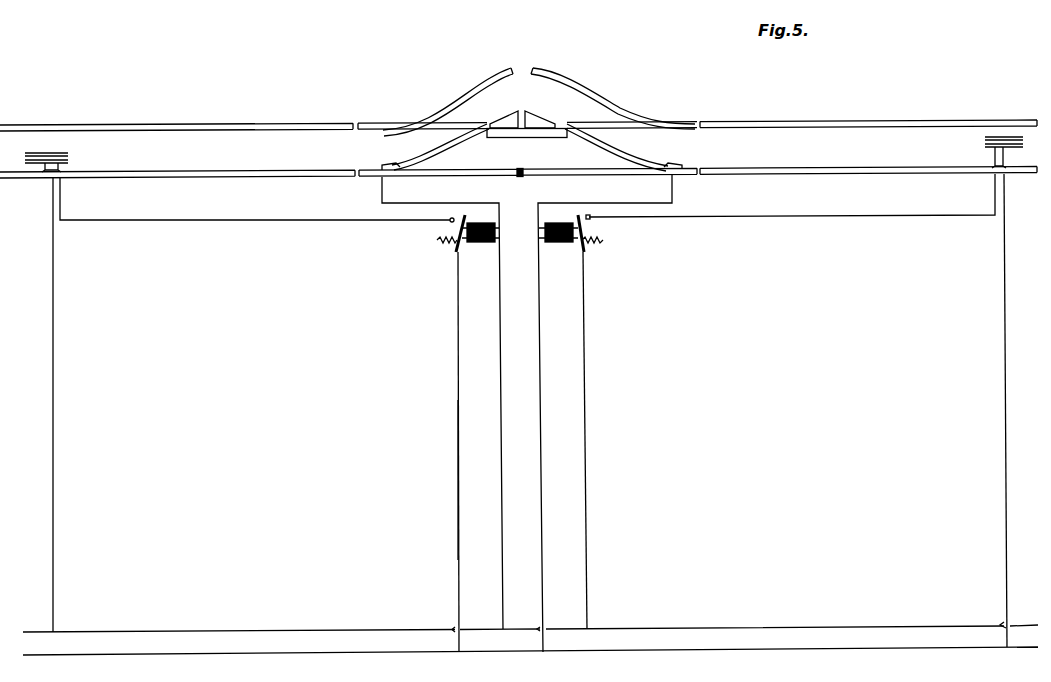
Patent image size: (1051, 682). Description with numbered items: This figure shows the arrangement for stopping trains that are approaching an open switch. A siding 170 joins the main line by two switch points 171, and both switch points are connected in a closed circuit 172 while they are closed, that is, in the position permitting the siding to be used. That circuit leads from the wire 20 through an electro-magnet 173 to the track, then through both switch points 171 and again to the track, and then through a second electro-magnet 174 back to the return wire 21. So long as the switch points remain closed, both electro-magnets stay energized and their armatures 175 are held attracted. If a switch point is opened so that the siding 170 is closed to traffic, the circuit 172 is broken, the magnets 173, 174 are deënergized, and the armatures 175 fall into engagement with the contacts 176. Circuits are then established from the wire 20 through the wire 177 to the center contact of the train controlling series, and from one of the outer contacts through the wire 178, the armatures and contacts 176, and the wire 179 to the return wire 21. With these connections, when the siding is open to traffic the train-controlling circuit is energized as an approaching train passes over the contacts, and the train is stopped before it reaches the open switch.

The siding 170 is at (607, 148).
The switch points 171 is at (400, 168).
The closed circuit 172 is at (527, 413).
The electro-magnet 173 is at (479, 243).
The electro-magnet 174 is at (558, 246).
The armatures 175 is at (456, 246).
The contacts 176 is at (451, 222).
The wire 177 is at (56, 463).
The wire 178 is at (527, 198).
The wire 179 is at (430, 487).
The wire 20 is at (530, 619).
The return wire 21 is at (503, 652).